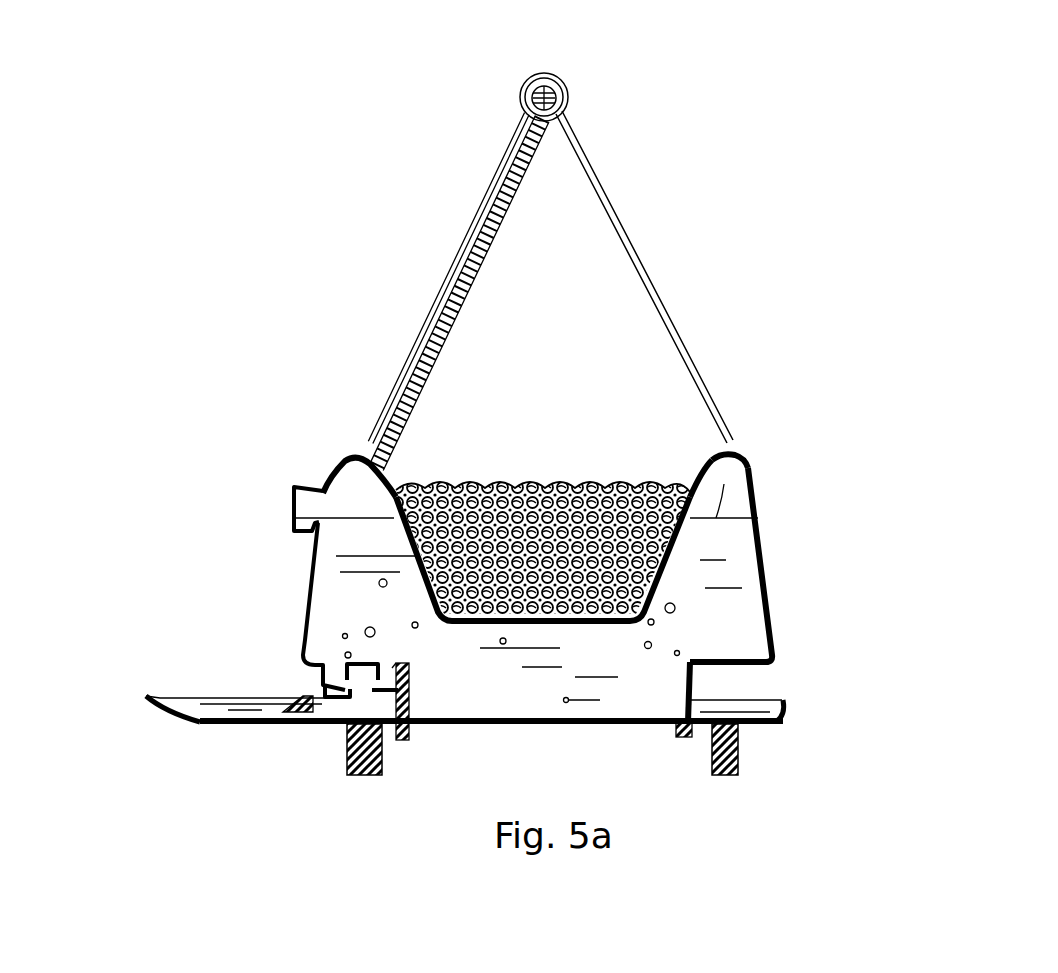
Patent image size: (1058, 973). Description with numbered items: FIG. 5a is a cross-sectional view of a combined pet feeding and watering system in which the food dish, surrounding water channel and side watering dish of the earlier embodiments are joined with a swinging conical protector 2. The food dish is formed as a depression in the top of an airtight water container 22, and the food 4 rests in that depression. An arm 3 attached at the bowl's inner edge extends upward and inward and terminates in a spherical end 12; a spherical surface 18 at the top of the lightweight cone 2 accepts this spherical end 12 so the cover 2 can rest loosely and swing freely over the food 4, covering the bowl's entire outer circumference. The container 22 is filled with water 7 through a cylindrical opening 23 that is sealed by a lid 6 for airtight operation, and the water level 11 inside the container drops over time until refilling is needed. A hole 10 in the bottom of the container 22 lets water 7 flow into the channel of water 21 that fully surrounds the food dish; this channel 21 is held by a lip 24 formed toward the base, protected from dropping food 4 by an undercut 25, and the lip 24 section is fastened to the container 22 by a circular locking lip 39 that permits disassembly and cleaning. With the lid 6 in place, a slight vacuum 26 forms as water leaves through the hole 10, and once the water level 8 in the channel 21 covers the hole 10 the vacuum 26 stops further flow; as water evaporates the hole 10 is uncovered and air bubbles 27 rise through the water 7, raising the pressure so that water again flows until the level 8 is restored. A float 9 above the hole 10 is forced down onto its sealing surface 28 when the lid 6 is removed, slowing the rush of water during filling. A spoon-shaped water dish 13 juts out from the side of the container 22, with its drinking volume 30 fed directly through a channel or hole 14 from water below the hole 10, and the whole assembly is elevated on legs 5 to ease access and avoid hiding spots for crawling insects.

The protective cover 2 is at (634, 240).
The arm 3 is at (473, 282).
The food 4 is at (562, 492).
The legs 5 is at (386, 763).
The lid 6 is at (293, 488).
The water 7 is at (740, 604).
The water level 8 is at (764, 701).
The float 9 is at (396, 653).
The hole 10 is at (328, 724).
The water level 11 is at (748, 488).
The spherical end 12 is at (557, 86).
The water dish 13 is at (221, 724).
The channel or hole 14 is at (294, 724).
The spherical surface 18 is at (568, 102).
The channel of water 21 is at (781, 731).
The water container 22 is at (776, 560).
The cylindrical opening 23 is at (323, 490).
The lip 24 is at (788, 714).
The undercut 25 is at (738, 682).
The vacuum 26 is at (737, 456).
The air bubbles 27 is at (347, 663).
The sealing surface 28 is at (330, 682).
The volume that the pet drinks from 30 is at (184, 706).
The circular locking lip 39 is at (678, 734).